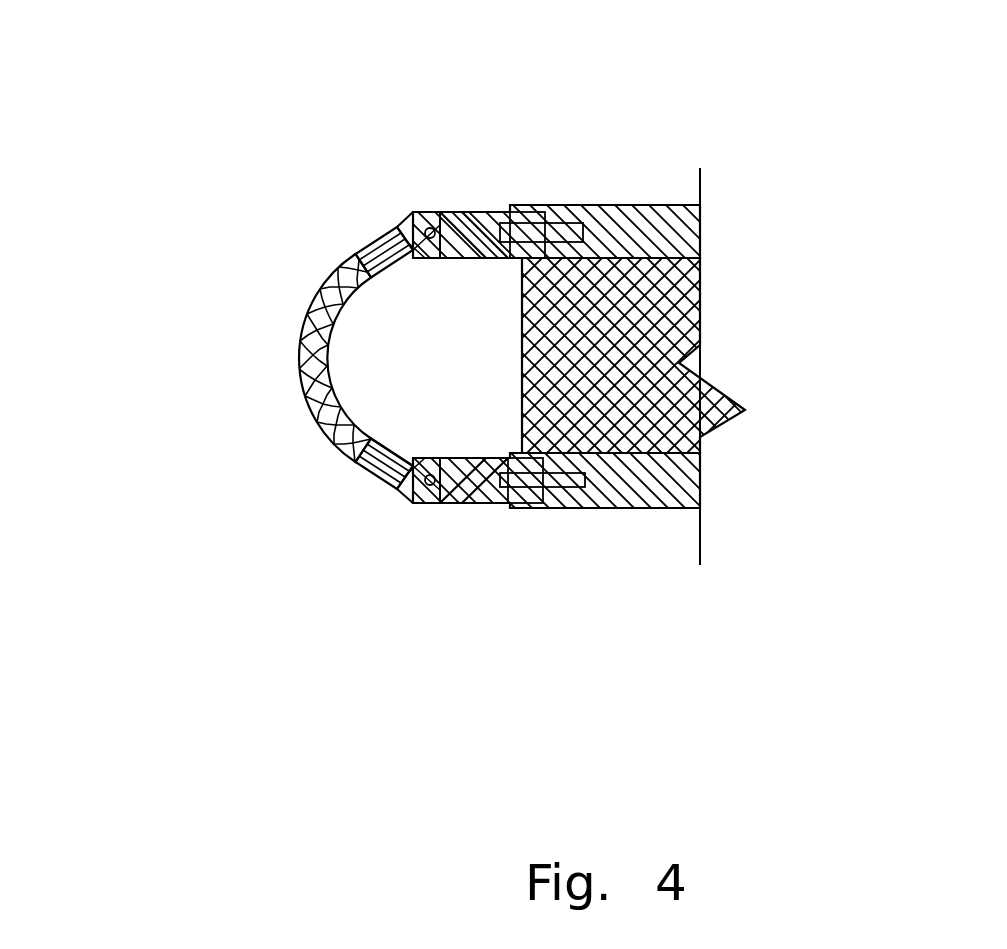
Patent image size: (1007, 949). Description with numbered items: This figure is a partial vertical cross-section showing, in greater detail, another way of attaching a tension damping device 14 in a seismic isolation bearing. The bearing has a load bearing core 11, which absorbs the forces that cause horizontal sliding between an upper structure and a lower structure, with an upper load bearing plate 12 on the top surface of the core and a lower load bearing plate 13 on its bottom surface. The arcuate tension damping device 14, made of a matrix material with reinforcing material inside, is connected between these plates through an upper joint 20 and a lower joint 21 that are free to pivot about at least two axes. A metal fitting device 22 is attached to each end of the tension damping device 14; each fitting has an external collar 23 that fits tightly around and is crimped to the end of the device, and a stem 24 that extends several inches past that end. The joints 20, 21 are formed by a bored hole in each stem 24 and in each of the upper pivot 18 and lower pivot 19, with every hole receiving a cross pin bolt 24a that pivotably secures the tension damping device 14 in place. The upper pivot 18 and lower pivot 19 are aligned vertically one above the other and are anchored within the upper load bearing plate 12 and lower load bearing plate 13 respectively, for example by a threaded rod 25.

The load bearing core 11 is at (632, 313).
The upper load bearing plate 12 is at (700, 225).
The lower load bearing plate 13 is at (700, 492).
The tension damping device 14 is at (313, 308).
The upper pivot 18 is at (473, 238).
The lower bearing pivot 19 is at (480, 480).
The upper joint 20 is at (453, 213).
The lower joint 21 is at (488, 508).
The metal fitting device 22 is at (375, 244).
The external collar 23 is at (378, 468).
The stem 24 is at (418, 502).
The cross pin bolt 24a is at (430, 228).
The threaded rod 25 is at (578, 490).